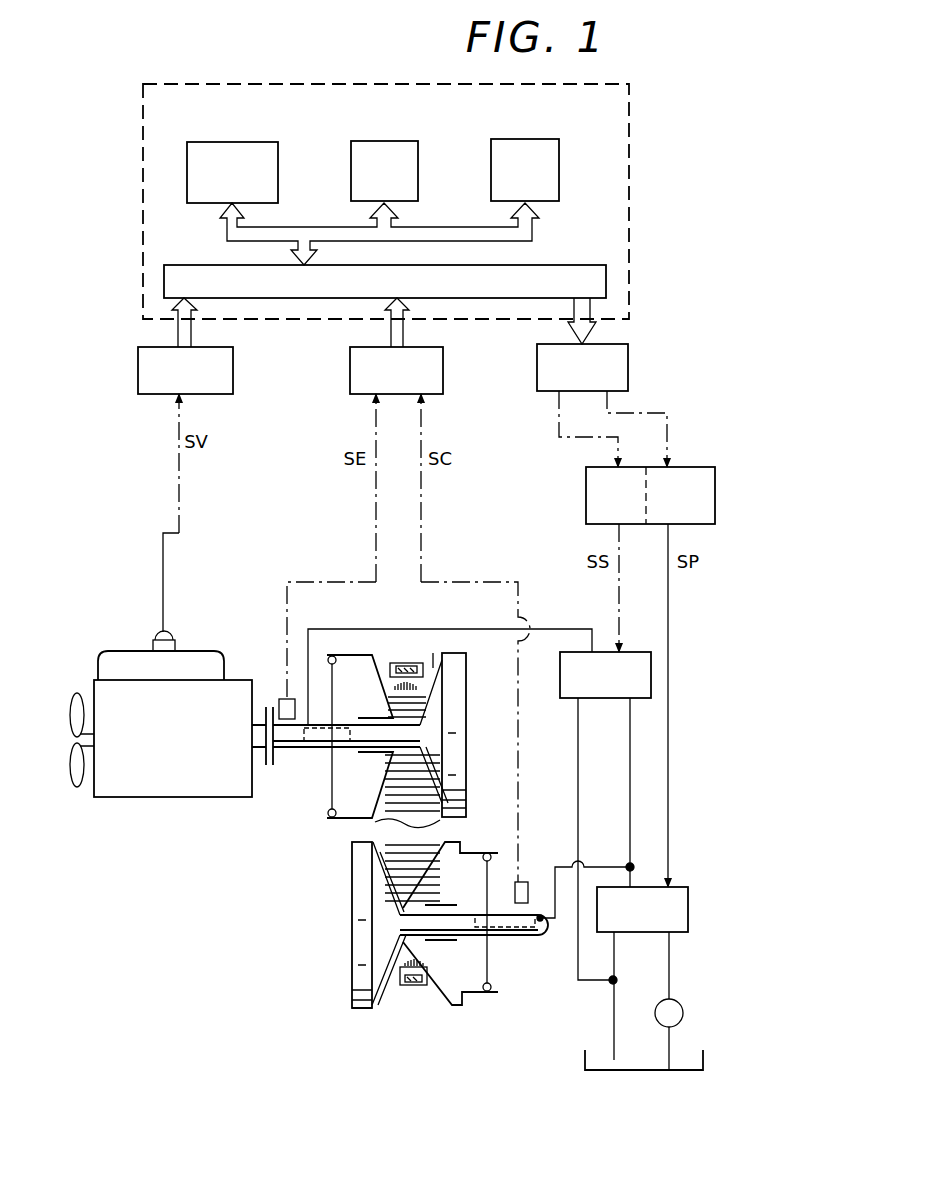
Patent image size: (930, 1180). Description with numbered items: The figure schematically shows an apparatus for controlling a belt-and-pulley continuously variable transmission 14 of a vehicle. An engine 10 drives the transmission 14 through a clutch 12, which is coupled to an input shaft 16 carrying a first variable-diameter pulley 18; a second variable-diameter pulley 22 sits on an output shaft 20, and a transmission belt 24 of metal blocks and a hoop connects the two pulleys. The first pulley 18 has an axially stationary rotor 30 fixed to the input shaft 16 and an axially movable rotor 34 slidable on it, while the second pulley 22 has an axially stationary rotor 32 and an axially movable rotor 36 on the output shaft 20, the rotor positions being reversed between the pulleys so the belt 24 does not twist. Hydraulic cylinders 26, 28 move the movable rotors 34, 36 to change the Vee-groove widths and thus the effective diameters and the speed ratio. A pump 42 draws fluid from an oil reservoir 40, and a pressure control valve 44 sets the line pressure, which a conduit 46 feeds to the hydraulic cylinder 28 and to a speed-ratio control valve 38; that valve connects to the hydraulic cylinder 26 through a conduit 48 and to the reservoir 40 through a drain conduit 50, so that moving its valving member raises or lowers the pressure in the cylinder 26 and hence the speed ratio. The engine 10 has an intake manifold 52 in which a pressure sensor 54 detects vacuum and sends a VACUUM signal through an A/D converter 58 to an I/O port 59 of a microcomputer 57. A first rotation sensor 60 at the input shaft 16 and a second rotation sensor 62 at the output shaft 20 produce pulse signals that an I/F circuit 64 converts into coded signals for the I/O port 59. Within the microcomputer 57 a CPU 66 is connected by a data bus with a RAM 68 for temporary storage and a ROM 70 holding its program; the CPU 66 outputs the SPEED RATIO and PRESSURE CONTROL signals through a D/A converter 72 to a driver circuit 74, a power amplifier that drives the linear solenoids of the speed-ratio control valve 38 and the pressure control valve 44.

The engine 10 is at (118, 787).
The clutch 12 is at (268, 772).
The continuously variable transmission 14 is at (385, 859).
The input shaft 16 is at (413, 737).
The first variable-diameter pulley 18 is at (390, 775).
The output shaft 20 is at (400, 925).
The second variable-diameter pulley 22 is at (426, 954).
The transmission belt 24 is at (411, 992).
The hydraulic cylinder 26 is at (325, 776).
The hydraulic cylinder 28 is at (497, 965).
The axially stationary rotor 30 is at (456, 683).
The axially stationary rotor 32 is at (358, 972).
The axially movable rotor 34 is at (345, 822).
The axially movable rotor 36 is at (458, 1008).
The speed-ratio control valve 38 is at (635, 660).
The oil reservoir 40 is at (598, 1072).
The pump 42 is at (683, 1013).
The pressure control valve 44 is at (690, 911).
The conduit 46 is at (633, 878).
The conduit 48 is at (387, 629).
The drain conduit 50 is at (578, 820).
The intake manifold 52 is at (110, 663).
The pressure sensor 54 is at (155, 642).
The microcomputer 57 is at (629, 195).
The A/D converter 58 is at (145, 380).
The I/O port 59 is at (565, 272).
The first rotation sensor 60 is at (287, 697).
The second rotation sensor 62 is at (522, 893).
The I/F circuit 64 is at (353, 380).
The CPU 66 is at (262, 148).
The RAM 68 is at (404, 148).
The ROM 70 is at (547, 145).
The D/A converter 72 is at (545, 376).
The driver circuit 74 is at (705, 487).